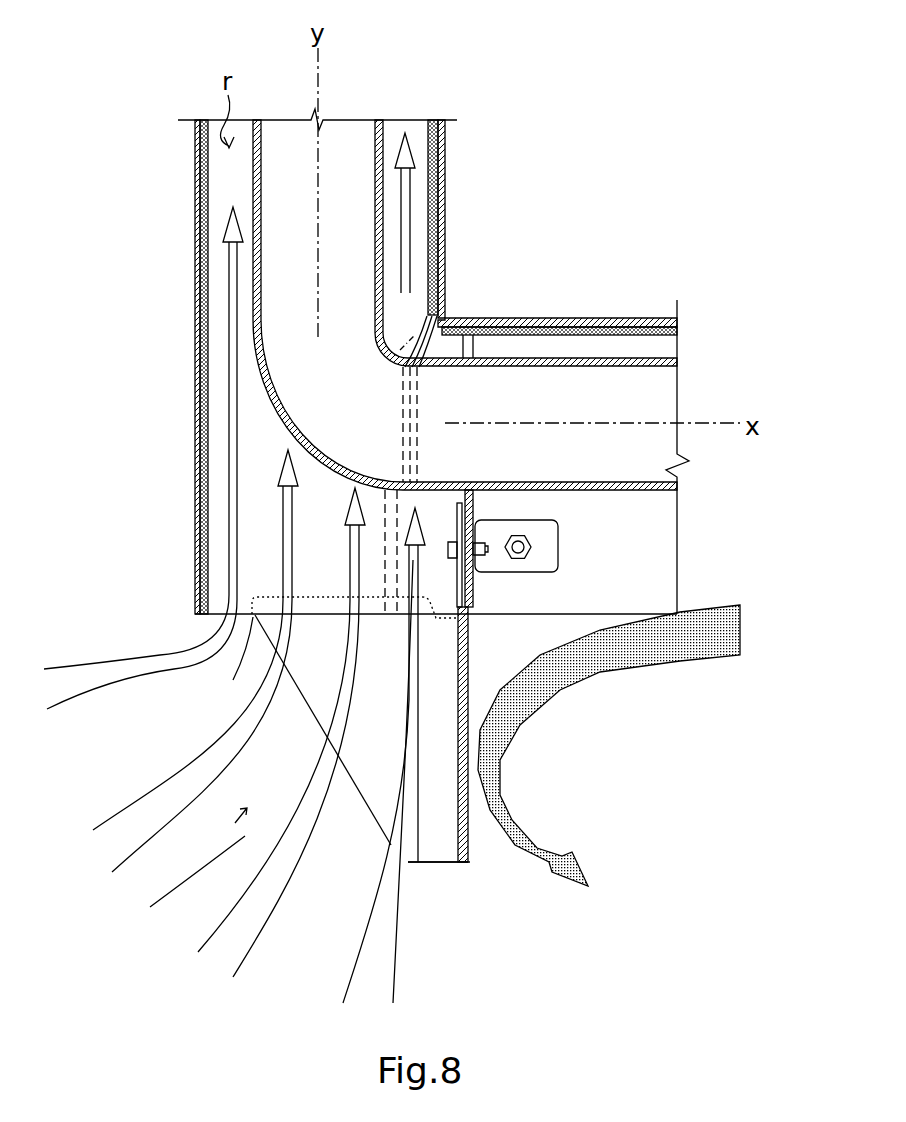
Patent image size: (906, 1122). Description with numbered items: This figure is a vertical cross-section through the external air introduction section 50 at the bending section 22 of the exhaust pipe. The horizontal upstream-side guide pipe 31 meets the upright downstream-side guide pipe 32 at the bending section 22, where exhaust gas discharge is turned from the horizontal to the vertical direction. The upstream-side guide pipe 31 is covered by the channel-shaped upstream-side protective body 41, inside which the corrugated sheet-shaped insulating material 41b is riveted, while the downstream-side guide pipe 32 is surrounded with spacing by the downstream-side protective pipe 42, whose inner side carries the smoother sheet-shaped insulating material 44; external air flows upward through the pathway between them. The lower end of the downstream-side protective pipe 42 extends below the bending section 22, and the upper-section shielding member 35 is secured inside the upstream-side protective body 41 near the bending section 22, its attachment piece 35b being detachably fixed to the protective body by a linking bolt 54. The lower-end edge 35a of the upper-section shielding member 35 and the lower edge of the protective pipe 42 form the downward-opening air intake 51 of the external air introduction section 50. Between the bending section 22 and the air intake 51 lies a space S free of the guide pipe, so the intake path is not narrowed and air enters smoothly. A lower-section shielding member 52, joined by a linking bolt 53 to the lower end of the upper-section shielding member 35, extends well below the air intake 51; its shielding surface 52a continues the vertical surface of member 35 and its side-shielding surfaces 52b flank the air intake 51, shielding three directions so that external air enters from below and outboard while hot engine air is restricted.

The bending section 22 is at (266, 436).
The upstream-side guide pipe 31 is at (622, 492).
The downstream-side guide pipe 32 is at (252, 180).
The upper-section shielding member 35 is at (473, 347).
The lower-end edge 35a is at (470, 613).
The attachment piece 35b is at (555, 537).
The upstream-side protective body 41 is at (617, 318).
The sheet-shaped insulating material 41b is at (576, 341).
The downstream-side protective pipe 42 is at (195, 279).
The sheet-shaped insulating material 44 is at (206, 356).
The external air introduction section 50 is at (228, 622).
The air intake 51 is at (227, 662).
The lower-section shielding member 52 is at (522, 867).
The shielding surface 52a is at (468, 812).
The side-shielding surfaces 52b is at (427, 843).
The linking bolt 53 is at (480, 555).
The linking bolt 54 is at (519, 531).
The space S is at (318, 596).